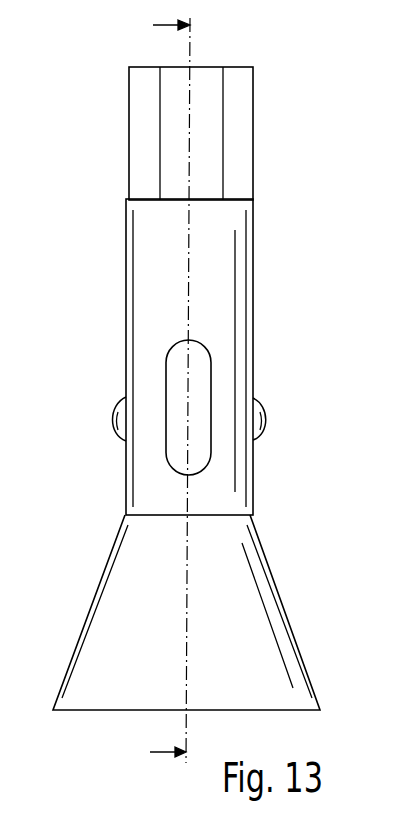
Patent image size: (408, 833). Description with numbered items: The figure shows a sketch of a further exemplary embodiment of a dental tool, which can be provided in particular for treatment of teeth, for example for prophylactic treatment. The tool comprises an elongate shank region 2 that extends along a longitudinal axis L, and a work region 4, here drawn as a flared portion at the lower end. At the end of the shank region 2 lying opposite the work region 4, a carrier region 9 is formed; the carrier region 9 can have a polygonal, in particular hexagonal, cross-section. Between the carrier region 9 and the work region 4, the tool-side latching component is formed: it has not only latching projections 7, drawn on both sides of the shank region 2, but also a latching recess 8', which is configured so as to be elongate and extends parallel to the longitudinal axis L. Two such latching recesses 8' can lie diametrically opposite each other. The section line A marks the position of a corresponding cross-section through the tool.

The shank region 2 is at (227, 257).
The work region 4 is at (277, 625).
The latching projections 7 is at (114, 425).
The latching recess 8' is at (236, 390).
The carrier region 9 is at (243, 128).
The longitudinal axis L is at (186, 610).
The section line A is at (167, 395).